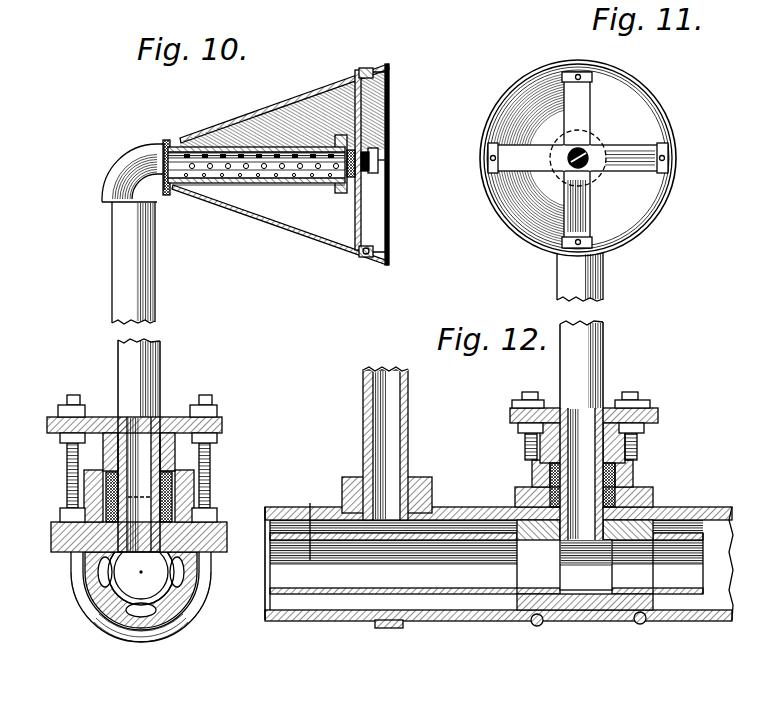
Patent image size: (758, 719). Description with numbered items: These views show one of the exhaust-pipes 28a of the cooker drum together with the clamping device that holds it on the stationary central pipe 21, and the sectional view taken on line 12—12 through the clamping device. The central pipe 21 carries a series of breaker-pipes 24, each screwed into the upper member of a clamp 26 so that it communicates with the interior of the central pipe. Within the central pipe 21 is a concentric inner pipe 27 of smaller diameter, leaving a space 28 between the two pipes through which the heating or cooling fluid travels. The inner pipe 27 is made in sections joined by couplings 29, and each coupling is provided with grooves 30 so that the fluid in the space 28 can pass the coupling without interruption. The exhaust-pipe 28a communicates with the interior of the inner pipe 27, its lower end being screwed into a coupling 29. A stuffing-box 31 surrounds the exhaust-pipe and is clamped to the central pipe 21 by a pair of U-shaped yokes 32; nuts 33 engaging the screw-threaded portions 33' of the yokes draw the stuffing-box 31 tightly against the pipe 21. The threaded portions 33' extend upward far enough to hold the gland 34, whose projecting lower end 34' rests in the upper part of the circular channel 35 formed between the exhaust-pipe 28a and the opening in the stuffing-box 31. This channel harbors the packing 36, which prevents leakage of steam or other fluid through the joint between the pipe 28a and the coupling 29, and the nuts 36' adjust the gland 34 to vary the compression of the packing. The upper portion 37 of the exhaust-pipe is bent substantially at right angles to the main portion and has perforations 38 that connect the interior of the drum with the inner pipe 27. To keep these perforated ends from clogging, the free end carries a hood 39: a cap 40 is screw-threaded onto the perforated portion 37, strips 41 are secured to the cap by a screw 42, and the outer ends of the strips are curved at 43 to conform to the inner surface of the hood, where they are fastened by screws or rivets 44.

In FIG. 10, the feed pipe 12 is at (112, 260).
In FIG. 10, the central pipe 21 is at (200, 603).
In FIG. 12, the central pipe 21 is at (480, 508).
In FIG. 12, the breaker-pipes 24 is at (409, 432).
In FIG. 12, the clamps 26 is at (416, 476).
In FIG. 12, the inner pipe 27 is at (301, 523).
In FIG. 12, the space 28 is at (463, 600).
In FIG. 10, the exhaust-pipes 28a is at (159, 376).
In FIG. 12, the exhaust-pipes 28a is at (598, 364).
In FIG. 10, the couplings 29 is at (105, 588).
In FIG. 12, the couplings 29 is at (593, 580).
In FIG. 10, the grooves 30 is at (186, 570).
In FIG. 12, the grooves 30 is at (572, 598).
In FIG. 10, the stuffing-box 31 is at (55, 528).
In FIG. 12, the stuffing-box 31 is at (652, 490).
In FIG. 10, the U-shaped strips or yokes 32 is at (103, 620).
In FIG. 12, the U-shaped strips or yokes 32 is at (540, 627).
In FIG. 10, the nuts 33 is at (134, 508).
In FIG. 10, the screw-threaded portions 33' is at (135, 475).
In FIG. 12, the screw-threaded portions 33' is at (581, 446).
In FIG. 10, the gland 34 is at (134, 421).
In FIG. 10, the projecting lower end of the gland 34' is at (209, 452).
In FIG. 12, the projecting lower end of the gland 34' is at (568, 440).
In FIG. 10, the circular groove or channel 35 is at (105, 475).
In FIG. 12, the circular groove or channel 35 is at (550, 485).
In FIG. 10, the packing 36 is at (154, 453).
In FIG. 12, the packing 36 is at (611, 443).
In FIG. 10, the nuts 36' is at (135, 407).
In FIG. 12, the nuts 36' is at (581, 408).
In FIG. 10, the upper portions of the exhaust-pipes 37 is at (240, 186).
In FIG. 10, the perforations 38 is at (309, 184).
In FIG. 10, the hoods 39 is at (305, 95).
In FIG. 10, the cap 40 is at (343, 143).
In FIG. 10, the strips 41 is at (362, 222).
In FIG. 11, the strips 41 is at (620, 160).
In FIG. 10, the screw 42 is at (378, 162).
In FIG. 11, the screw 42 is at (594, 170).
In FIG. 10, the curved outer ends 43 is at (371, 71).
In FIG. 11, the curved outer ends 43 is at (549, 73).
In FIG. 10, the screws or rivets 44 is at (362, 72).
In FIG. 11, the screws or rivets 44 is at (597, 71).